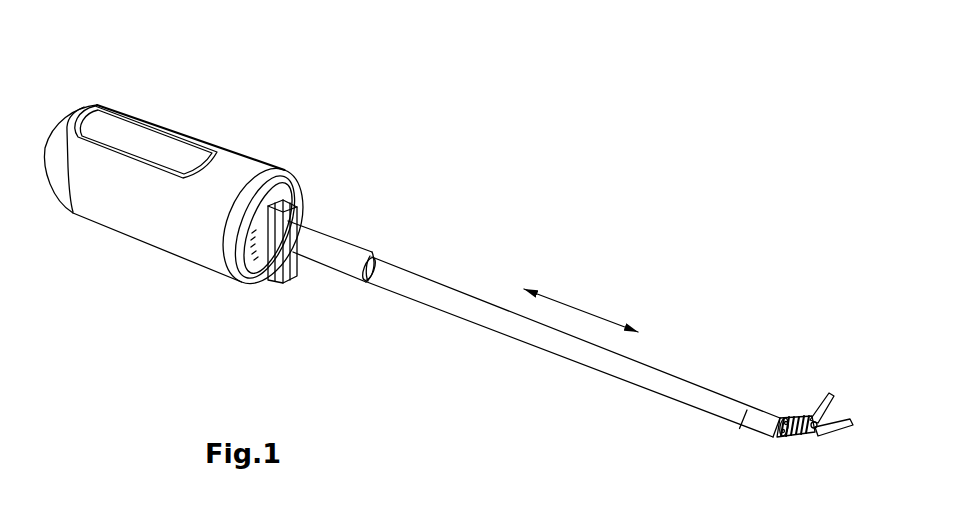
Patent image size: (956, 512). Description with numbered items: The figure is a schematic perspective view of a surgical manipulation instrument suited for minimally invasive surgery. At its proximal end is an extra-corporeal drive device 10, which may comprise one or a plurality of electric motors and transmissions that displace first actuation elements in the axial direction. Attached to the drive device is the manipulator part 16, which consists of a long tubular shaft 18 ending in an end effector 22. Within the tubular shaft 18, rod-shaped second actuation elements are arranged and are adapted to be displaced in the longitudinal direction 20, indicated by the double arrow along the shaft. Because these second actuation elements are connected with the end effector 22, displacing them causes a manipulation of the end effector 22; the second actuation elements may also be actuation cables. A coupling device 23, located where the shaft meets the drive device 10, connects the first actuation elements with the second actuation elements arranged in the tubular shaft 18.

The extra-corporeal drive device 10 is at (212, 115).
The manipulator part 16 is at (678, 320).
The tubular shaft 18 is at (530, 331).
The longitudinal direction 20 is at (583, 308).
The end effector 22 is at (797, 392).
The coupling device 23 is at (338, 217).